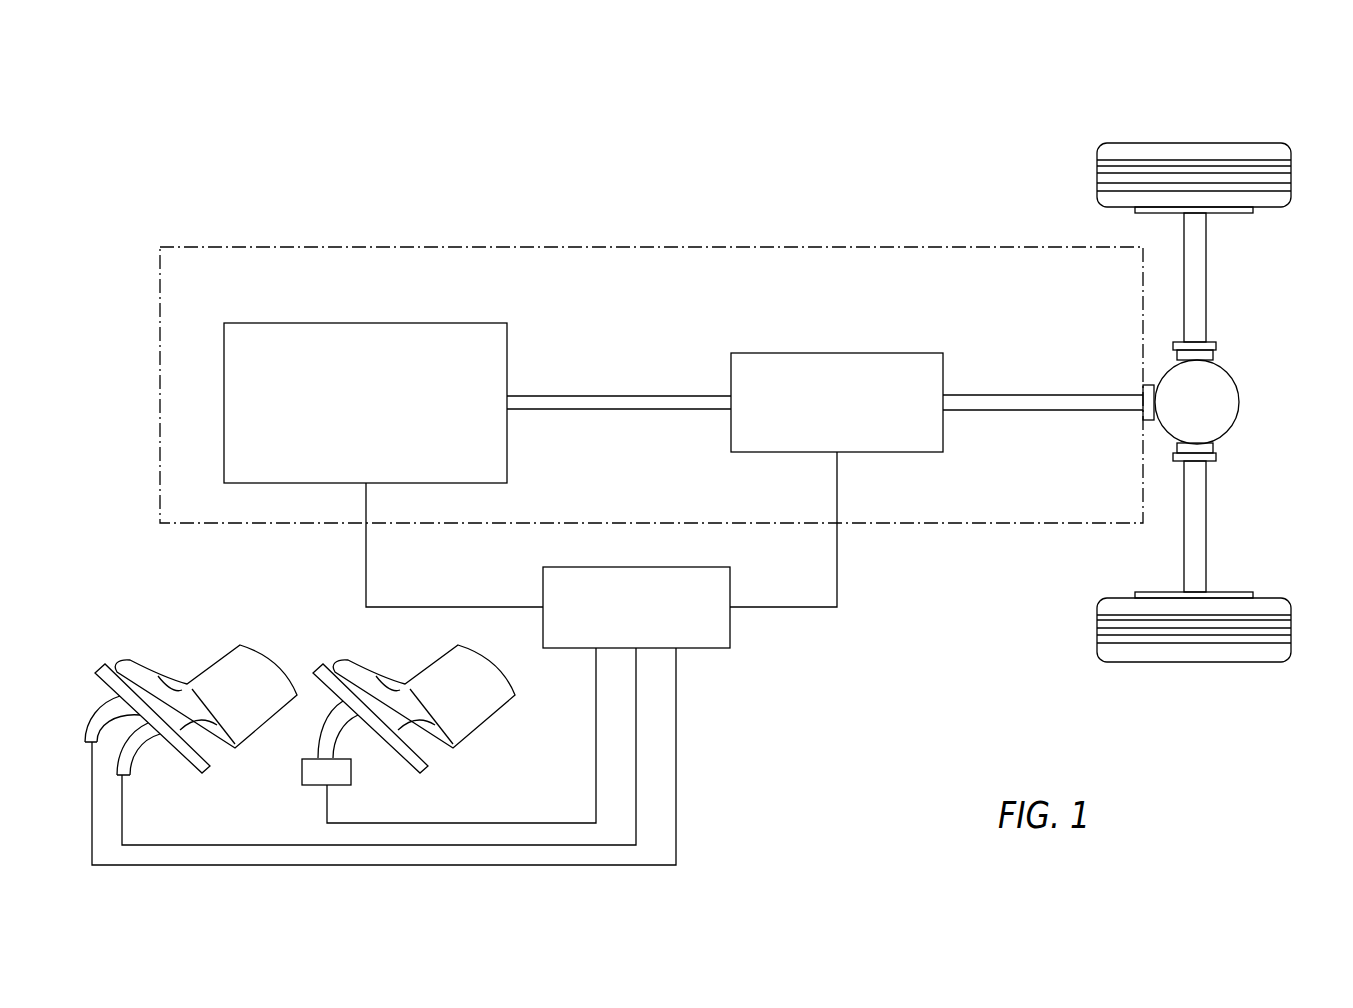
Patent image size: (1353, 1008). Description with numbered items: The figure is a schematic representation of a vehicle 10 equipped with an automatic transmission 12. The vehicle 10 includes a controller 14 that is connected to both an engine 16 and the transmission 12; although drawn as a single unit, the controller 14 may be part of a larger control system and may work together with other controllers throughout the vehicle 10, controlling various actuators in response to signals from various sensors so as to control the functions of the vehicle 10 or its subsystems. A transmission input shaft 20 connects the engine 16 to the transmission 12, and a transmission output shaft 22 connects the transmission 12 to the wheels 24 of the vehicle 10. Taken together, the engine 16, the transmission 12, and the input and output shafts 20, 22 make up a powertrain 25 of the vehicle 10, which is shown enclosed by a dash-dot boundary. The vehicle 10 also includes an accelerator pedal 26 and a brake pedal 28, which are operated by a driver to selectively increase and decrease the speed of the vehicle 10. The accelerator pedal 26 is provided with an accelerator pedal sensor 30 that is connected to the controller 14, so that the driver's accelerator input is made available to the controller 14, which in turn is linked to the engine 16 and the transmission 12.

The vehicle 10 is at (393, 141).
The automatic transmission 12 is at (858, 352).
The controller 14 is at (693, 648).
The engine 16 is at (234, 322).
The transmission input shaft 20 is at (626, 395).
The transmission output shaft 22 is at (1003, 395).
The wheels 24 is at (1265, 144).
The powertrain 25 is at (664, 246).
The accelerator pedal 26 is at (400, 762).
The brake pedal 28 is at (182, 762).
The accelerator pedal sensor 30 is at (351, 776).